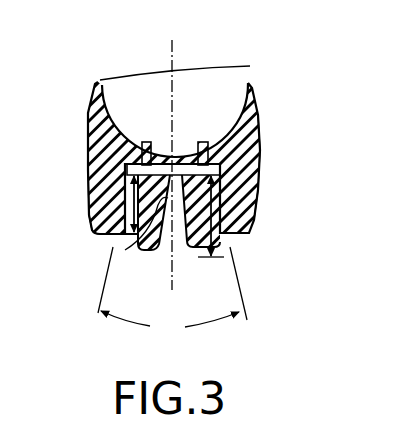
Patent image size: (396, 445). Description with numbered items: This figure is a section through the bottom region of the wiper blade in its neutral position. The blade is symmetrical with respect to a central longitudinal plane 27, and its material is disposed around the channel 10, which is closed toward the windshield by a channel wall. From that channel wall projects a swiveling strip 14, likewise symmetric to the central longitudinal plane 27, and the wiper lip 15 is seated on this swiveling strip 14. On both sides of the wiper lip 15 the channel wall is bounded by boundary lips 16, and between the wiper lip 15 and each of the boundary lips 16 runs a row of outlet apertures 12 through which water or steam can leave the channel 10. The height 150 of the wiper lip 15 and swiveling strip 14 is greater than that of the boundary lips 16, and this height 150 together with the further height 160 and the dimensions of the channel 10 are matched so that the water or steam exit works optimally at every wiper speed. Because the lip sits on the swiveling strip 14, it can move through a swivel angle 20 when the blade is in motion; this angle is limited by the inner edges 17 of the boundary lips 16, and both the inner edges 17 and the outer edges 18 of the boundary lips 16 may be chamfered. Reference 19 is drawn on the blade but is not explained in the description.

The channel 10 is at (222, 88).
The outlet apertures 12 is at (173, 143).
The swiveling strip 14 is at (141, 146).
The wiper lip 15 is at (156, 240).
The boundary lips 16 is at (110, 168).
The inner edges 17 is at (120, 239).
The outer edges 18 is at (90, 197).
The lower wall portion 19 is at (92, 218).
The swivel angle 20 is at (172, 296).
The central longitudinal plane 27 is at (172, 50).
The height 150 is at (204, 216).
The height 160 is at (125, 250).